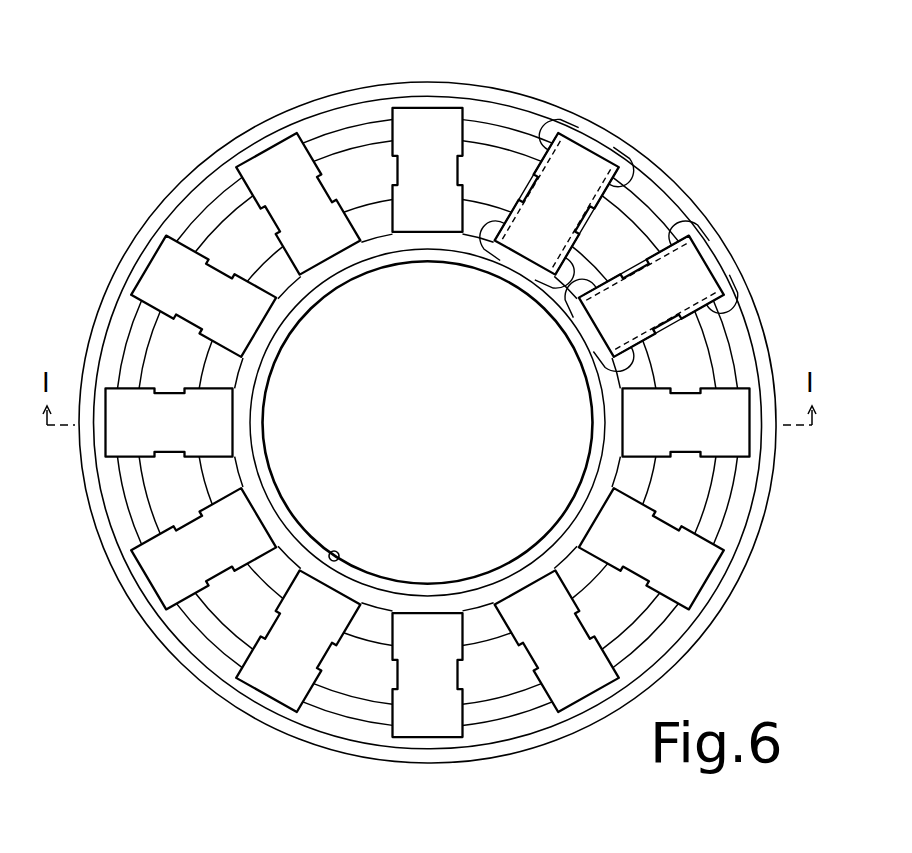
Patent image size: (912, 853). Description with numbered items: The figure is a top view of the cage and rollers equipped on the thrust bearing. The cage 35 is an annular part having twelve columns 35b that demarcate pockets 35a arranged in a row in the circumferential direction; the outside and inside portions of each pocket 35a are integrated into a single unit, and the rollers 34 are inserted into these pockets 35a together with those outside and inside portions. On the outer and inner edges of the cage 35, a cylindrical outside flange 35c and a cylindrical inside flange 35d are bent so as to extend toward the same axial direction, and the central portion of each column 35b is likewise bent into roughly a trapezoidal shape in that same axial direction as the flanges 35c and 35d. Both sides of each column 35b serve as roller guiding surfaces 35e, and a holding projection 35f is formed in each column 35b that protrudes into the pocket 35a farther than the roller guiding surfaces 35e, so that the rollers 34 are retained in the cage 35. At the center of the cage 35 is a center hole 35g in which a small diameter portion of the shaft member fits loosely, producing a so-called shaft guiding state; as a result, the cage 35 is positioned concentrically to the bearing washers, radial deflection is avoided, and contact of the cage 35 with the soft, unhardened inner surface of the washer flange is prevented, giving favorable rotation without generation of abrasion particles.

The roller 34 is at (506, 270).
The cage 35 is at (155, 166).
The pocket 35a is at (273, 177).
The column 35b is at (353, 172).
The outside cylindrical flange 35c is at (188, 656).
The inside cylindrical flange 35d is at (305, 541).
The roller guiding surface 35e is at (572, 128).
The holding projection 35f is at (548, 150).
The center hole 35g is at (340, 555).